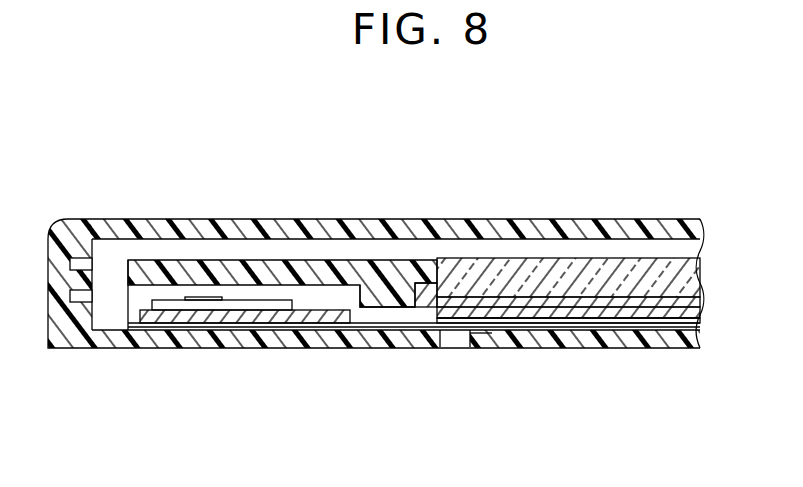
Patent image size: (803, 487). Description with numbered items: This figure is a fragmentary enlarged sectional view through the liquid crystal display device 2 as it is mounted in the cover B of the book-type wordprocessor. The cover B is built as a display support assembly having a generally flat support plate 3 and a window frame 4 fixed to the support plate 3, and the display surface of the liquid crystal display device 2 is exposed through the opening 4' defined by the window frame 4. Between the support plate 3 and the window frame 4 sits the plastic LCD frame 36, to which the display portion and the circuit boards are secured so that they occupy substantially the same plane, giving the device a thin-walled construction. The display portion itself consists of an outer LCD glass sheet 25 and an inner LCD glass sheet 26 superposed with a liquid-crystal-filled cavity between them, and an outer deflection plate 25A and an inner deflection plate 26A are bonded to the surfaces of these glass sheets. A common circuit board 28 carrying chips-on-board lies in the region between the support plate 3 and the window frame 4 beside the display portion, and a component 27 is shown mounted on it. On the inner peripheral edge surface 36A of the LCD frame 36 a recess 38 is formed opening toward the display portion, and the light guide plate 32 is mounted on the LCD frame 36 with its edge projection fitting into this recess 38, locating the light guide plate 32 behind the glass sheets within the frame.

The liquid crystal display device 2 is at (668, 338).
The support plate 3 is at (452, 220).
The window frame 4 is at (374, 364).
The opening 4' is at (585, 364).
The outer LCD glass sheet 25 is at (565, 313).
The outer deflection plate 25A is at (540, 320).
The inner LCD glass sheet 26 is at (628, 322).
The inner deflection plate 26A is at (663, 300).
The electronic component 27 is at (183, 296).
The common circuit board 28 is at (235, 320).
The light guide plate 32 is at (570, 270).
The LCD frame 36 is at (272, 280).
The inner peripheral edge surface 36A is at (433, 280).
The recess 38 is at (432, 305).
The cover B is at (511, 212).